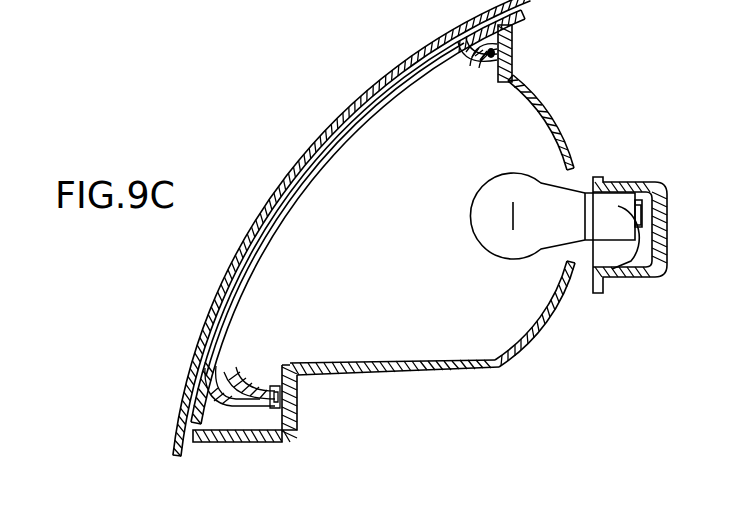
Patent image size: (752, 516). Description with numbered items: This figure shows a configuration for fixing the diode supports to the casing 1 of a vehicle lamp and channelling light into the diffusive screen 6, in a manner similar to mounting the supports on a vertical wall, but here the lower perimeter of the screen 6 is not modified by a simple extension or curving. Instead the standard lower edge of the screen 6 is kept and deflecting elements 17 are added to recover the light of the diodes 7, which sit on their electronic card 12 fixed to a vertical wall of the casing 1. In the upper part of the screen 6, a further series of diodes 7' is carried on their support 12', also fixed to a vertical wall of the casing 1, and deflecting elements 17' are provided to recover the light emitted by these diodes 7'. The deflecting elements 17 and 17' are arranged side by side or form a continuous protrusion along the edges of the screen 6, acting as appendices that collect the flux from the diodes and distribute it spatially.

The casing 1 is at (428, 368).
The diffusive screen 6 is at (306, 182).
The diodes 7 is at (252, 378).
The diodes 7' is at (467, 78).
The electronic card 12 is at (251, 383).
The support 12' is at (494, 83).
The deflecting elements 17 is at (208, 385).
The deflecting elements 17' is at (439, 40).